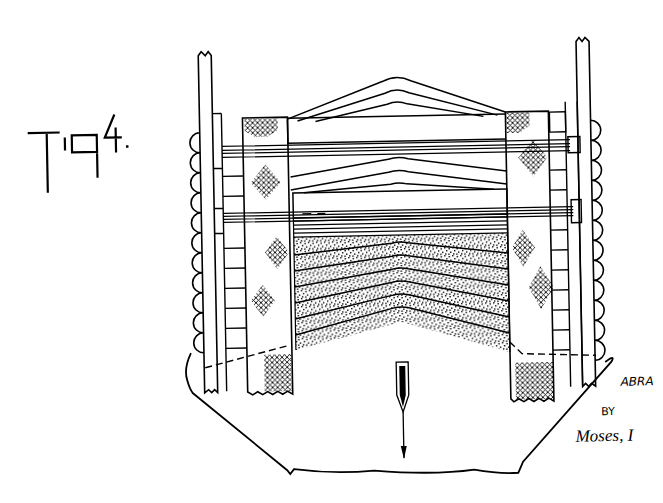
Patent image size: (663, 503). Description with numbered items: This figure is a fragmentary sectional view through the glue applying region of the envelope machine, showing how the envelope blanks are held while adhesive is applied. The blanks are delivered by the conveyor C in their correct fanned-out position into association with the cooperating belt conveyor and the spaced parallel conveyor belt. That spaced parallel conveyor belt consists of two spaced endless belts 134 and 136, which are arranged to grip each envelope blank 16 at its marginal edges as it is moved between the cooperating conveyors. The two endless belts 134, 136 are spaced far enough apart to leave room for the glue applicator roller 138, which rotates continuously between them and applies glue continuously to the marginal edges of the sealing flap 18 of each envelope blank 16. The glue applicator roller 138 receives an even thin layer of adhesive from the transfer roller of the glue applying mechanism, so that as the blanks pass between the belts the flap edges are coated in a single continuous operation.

The conveyor C is at (261, 108).
The envelope blank 16 is at (239, 407).
The sealing flap 18 is at (450, 111).
The endless belt 134 is at (527, 403).
The endless belt 136 is at (267, 393).
The glue applicator roller 138 is at (406, 211).